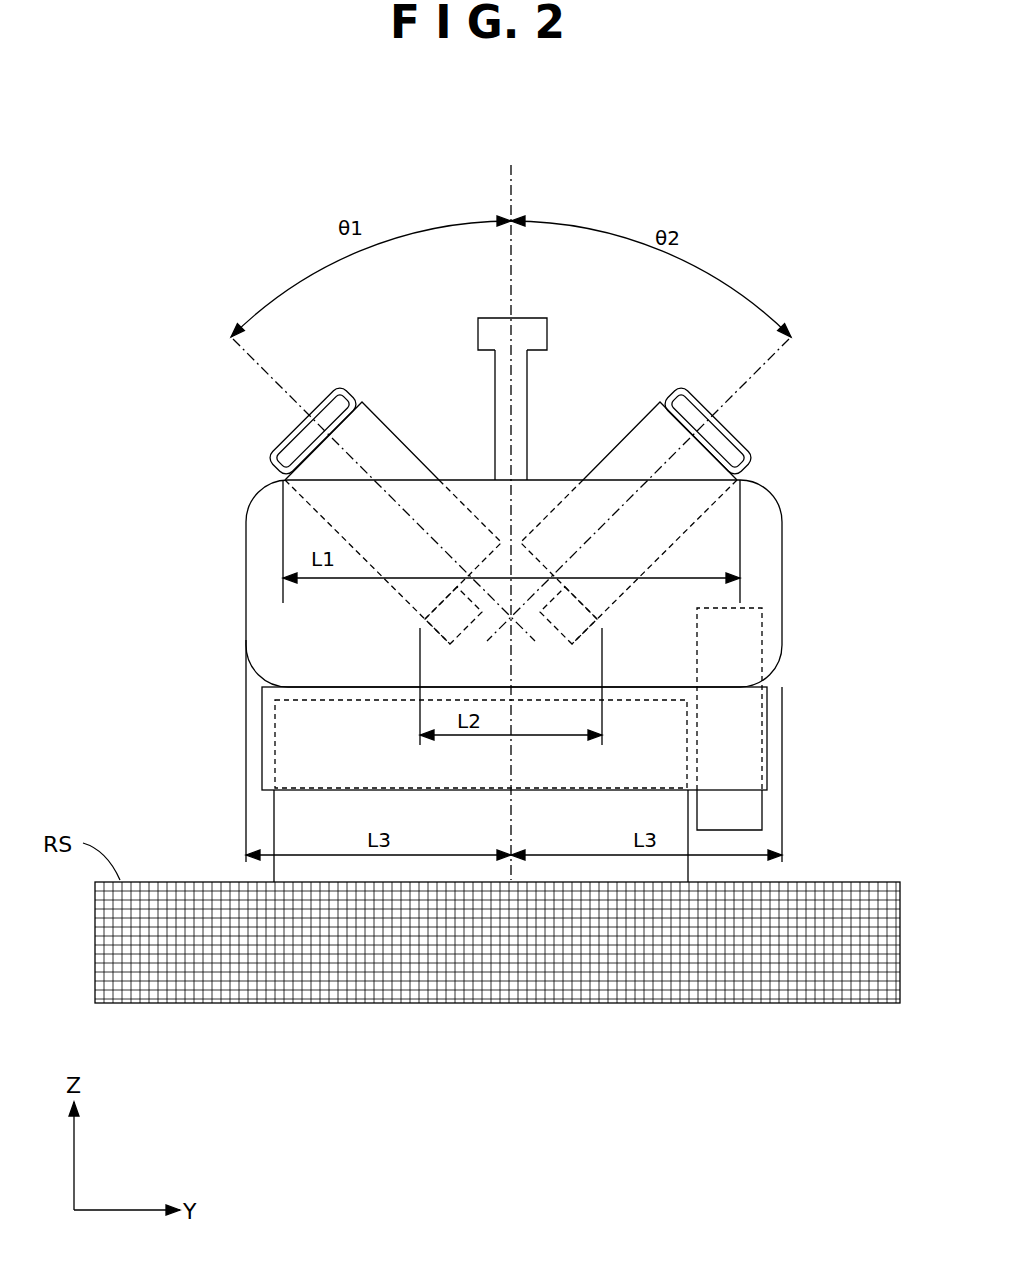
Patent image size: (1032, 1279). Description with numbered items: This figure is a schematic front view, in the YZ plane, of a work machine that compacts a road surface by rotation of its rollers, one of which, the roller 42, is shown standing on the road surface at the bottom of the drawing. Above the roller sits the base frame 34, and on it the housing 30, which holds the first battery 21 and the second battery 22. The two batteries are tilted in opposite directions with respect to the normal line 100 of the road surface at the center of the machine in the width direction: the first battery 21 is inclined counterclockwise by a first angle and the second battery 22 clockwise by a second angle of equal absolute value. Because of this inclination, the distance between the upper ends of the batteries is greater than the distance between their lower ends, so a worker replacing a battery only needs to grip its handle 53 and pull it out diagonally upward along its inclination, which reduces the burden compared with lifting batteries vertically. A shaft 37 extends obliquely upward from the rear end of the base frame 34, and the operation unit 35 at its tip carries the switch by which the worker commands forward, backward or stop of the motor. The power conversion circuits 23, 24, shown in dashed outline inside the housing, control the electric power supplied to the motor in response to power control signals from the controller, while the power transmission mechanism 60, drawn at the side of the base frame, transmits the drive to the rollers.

The normal line 100 is at (513, 200).
The first battery 21 is at (380, 463).
The second battery 22 is at (640, 452).
The power conversion circuit 23 is at (428, 650).
The power conversion circuit 24 is at (598, 642).
The housing 30 is at (782, 583).
The base frame 34 is at (262, 735).
The operation unit 35 is at (537, 332).
The shaft 37 is at (531, 400).
The roller 42 is at (273, 823).
The handle 53 is at (303, 437).
The power transmission mechanism 60 is at (762, 810).